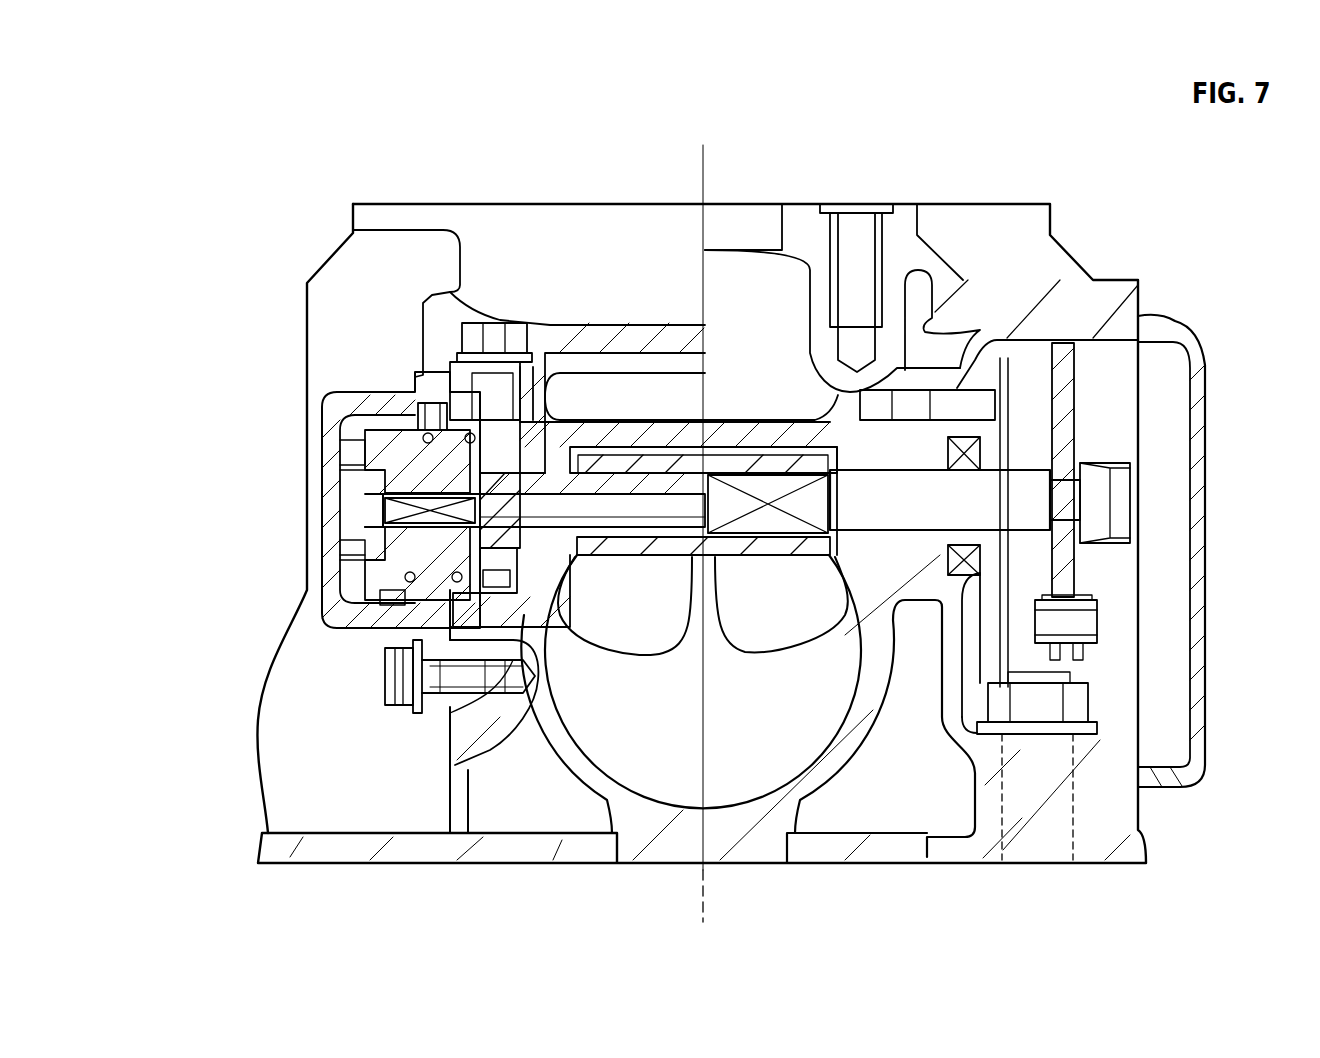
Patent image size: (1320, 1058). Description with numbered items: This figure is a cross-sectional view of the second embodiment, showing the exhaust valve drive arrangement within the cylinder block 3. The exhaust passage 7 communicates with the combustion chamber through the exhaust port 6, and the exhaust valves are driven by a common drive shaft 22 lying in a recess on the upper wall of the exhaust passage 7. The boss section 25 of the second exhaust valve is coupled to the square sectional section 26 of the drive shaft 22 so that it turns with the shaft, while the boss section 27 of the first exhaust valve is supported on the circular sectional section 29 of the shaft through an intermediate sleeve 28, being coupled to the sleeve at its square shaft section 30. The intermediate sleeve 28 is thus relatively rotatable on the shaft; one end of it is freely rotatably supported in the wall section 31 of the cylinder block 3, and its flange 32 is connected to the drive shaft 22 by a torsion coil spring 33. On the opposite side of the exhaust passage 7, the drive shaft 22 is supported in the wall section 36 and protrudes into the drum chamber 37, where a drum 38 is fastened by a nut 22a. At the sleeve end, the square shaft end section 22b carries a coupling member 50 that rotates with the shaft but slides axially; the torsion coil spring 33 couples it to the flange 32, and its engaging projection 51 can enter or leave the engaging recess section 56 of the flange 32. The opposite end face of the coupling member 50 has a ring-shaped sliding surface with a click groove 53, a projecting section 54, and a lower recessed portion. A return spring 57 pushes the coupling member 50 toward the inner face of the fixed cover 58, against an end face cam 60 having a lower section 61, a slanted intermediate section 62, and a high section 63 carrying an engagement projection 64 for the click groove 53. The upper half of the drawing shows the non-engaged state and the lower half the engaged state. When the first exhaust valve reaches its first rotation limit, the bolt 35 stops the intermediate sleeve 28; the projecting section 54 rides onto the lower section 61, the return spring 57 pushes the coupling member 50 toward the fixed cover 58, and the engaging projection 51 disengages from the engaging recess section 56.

The cylinder block 3 is at (350, 262).
The exhaust port 6 is at (650, 640).
The exhaust passage 7 is at (670, 772).
The drive shaft 22 is at (878, 509).
The nut 22a is at (1110, 478).
The shaft end section 22b is at (357, 490).
The boss section 25 is at (790, 440).
The square sectional section 26 is at (780, 530).
The boss section 27 is at (625, 470).
The intermediate sleeve 28 is at (545, 480).
The circular sectional section 29 is at (660, 540).
The square shaft section 30 is at (610, 555).
The wall section 31 is at (578, 400).
The flange 32 is at (538, 438).
The torsion coil spring 33 is at (415, 625).
The bolt 35 is at (490, 387).
The wall section 36 is at (960, 583).
The drum chamber 37 is at (1120, 593).
The drum 38 is at (1075, 430).
The coupling member 50 is at (375, 455).
The engaging projection 51 is at (487, 598).
The click groove 53 is at (342, 572).
The projecting section 54 is at (332, 598).
The engaging recess section 56 is at (500, 568).
The return spring 57 is at (388, 420).
The fixed cover 58 is at (350, 440).
The end face cam 60 is at (335, 505).
The lower section 61 is at (362, 480).
The intermediate section 62 is at (352, 518).
The high section 63 is at (342, 550).
The engagement projection 64 is at (350, 600).